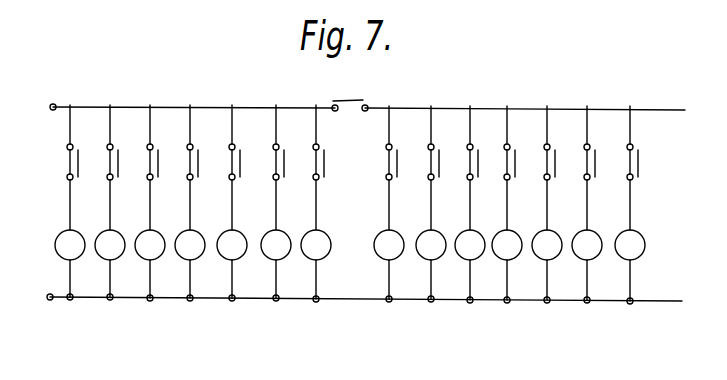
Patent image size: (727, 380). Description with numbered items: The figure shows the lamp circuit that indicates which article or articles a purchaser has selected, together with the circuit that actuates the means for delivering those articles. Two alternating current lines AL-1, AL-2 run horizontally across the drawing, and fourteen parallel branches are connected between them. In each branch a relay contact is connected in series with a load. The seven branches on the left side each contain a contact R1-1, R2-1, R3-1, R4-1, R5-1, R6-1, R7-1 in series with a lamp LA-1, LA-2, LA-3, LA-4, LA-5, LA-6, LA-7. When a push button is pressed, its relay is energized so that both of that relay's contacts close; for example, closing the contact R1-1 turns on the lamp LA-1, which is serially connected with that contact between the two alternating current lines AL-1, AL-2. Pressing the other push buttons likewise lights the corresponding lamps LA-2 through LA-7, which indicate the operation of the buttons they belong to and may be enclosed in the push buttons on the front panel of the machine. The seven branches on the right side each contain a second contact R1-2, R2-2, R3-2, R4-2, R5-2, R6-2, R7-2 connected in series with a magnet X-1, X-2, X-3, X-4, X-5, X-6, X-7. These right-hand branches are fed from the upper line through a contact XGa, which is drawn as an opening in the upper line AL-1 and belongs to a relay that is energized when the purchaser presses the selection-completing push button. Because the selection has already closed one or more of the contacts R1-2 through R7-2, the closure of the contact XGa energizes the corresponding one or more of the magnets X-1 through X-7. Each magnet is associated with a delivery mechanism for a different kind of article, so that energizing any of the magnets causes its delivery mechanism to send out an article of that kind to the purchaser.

The alternating current line AL-1 is at (62, 103).
The alternating current line AL-2 is at (54, 300).
The contact of relay XG XGa is at (372, 90).
The contact of relay R1 R1-1 is at (77, 175).
The contact of relay R2 R2-1 is at (117, 163).
The contact of relay R3 R3-1 is at (157, 163).
The contact of relay R4 R4-1 is at (197, 163).
The contact of relay R5 R5-1 is at (239, 162).
The contact of relay R6 R6-1 is at (283, 165).
The contact of relay R7 R7-1 is at (323, 162).
The contact of relay R1 R1-2 is at (395, 167).
The contact of relay R2 R2-2 is at (437, 169).
The contact of relay R3 R3-2 is at (477, 168).
The contact of relay R4 R4-2 is at (506, 162).
The contact of relay R5 R5-2 is at (554, 165).
The contact of relay R6 R6-2 is at (594, 168).
The contact of relay R7 R7-2 is at (632, 172).
The lamp LA-1 is at (66, 256).
The lamp LA-2 is at (120, 253).
The lamp LA-3 is at (155, 253).
The lamp LA-4 is at (196, 252).
The lamp LA-5 is at (238, 252).
The lamp LA-6 is at (281, 253).
The lamp LA-7 is at (322, 252).
The magnet X-1 is at (386, 254).
The magnet X-2 is at (426, 254).
The magnet X-3 is at (467, 252).
The magnet X-4 is at (502, 255).
The magnet X-5 is at (542, 255).
The magnet X-6 is at (581, 256).
The magnet X-7 is at (626, 255).